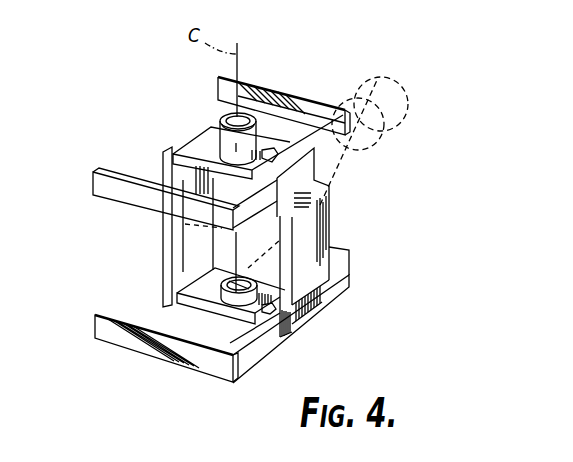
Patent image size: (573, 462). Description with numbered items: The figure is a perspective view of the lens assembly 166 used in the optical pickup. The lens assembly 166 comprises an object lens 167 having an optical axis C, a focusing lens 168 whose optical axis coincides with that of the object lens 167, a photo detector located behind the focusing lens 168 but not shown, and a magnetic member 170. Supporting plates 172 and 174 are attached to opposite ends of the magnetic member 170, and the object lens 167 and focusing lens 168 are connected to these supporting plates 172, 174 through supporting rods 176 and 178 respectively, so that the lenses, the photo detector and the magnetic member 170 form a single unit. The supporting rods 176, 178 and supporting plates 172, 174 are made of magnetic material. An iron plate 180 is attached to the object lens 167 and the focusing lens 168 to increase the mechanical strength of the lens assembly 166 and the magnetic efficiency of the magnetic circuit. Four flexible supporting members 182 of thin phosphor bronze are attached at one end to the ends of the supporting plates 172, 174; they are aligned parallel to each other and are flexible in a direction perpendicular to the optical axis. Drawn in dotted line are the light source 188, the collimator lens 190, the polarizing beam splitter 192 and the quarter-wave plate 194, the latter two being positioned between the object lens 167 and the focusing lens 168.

The lens assembly 166 is at (338, 222).
The object lens 167 is at (246, 111).
The focusing lens 168 is at (228, 300).
The magnetic member 170 is at (315, 213).
The supporting plate 172 is at (335, 104).
The supporting plate 174 is at (245, 357).
The supporting rod 176 is at (271, 151).
The supporting rod 178 is at (268, 312).
The iron plate 180 is at (166, 175).
The flexible supporting member 182 is at (125, 190).
The light source 188 is at (408, 91).
The collimator lens 190 is at (378, 141).
The polarizing beam splitter 192 is at (195, 253).
The quarter-wave plate 194 is at (183, 226).